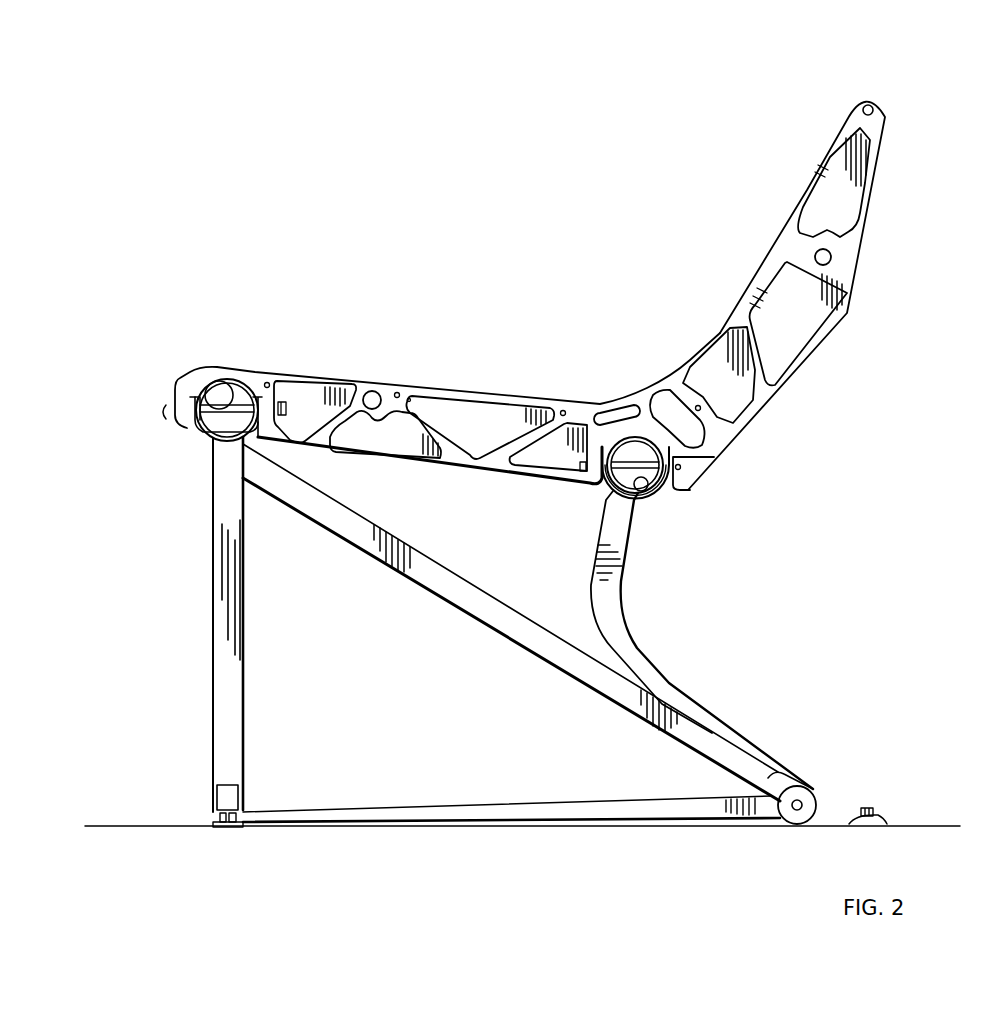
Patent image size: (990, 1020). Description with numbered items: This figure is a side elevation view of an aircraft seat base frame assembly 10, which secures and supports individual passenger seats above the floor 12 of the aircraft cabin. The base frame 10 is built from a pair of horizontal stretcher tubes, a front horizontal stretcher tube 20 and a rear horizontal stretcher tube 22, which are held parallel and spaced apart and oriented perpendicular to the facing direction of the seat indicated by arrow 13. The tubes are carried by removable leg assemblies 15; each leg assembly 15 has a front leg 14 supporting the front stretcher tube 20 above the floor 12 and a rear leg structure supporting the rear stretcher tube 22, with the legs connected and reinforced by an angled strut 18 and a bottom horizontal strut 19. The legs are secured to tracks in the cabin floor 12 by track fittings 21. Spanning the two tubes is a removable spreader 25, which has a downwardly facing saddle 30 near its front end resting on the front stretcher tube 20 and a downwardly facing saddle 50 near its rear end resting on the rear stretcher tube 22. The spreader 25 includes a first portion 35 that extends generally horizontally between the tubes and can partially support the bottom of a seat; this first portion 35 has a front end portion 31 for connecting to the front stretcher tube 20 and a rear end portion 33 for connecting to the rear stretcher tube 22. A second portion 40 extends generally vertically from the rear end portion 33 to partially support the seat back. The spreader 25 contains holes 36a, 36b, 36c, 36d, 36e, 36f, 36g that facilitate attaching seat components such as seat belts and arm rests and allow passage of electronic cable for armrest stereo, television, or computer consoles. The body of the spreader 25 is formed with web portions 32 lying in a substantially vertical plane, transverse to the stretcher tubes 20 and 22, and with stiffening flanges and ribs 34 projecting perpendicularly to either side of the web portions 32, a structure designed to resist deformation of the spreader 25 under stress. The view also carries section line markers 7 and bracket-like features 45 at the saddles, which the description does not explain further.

The base frame assembly 10 is at (210, 607).
The floor 12 is at (155, 826).
The arrow 13 is at (555, 176).
The front leg 14 is at (237, 700).
The leg assembly 15 is at (657, 667).
The angled strut 18 is at (482, 603).
The bottom horizontal strut 19 is at (510, 808).
The front horizontal stretcher tube 20 is at (214, 390).
The track fitting 21 is at (236, 826).
The rear horizontal stretcher tube 22 is at (646, 490).
The spreader 25 is at (509, 387).
The saddle 30 is at (240, 380).
The front end portion 31 is at (232, 365).
The web portion 32 is at (848, 220).
The rear end portion 33 is at (595, 400).
The stiffening flanges and ribs 34 is at (830, 272).
The first portion 35 is at (383, 397).
The hole 36a is at (267, 383).
The hole 36b is at (397, 393).
The hole 36c is at (408, 397).
The hole 36d is at (563, 411).
The hole 36e is at (698, 406).
The hole 36f is at (832, 258).
The hole 36g is at (876, 108).
The second portion 40 is at (806, 192).
The clamp bracket 45 is at (193, 432).
The saddle 50 is at (632, 440).
The section line 7 is at (425, 318).